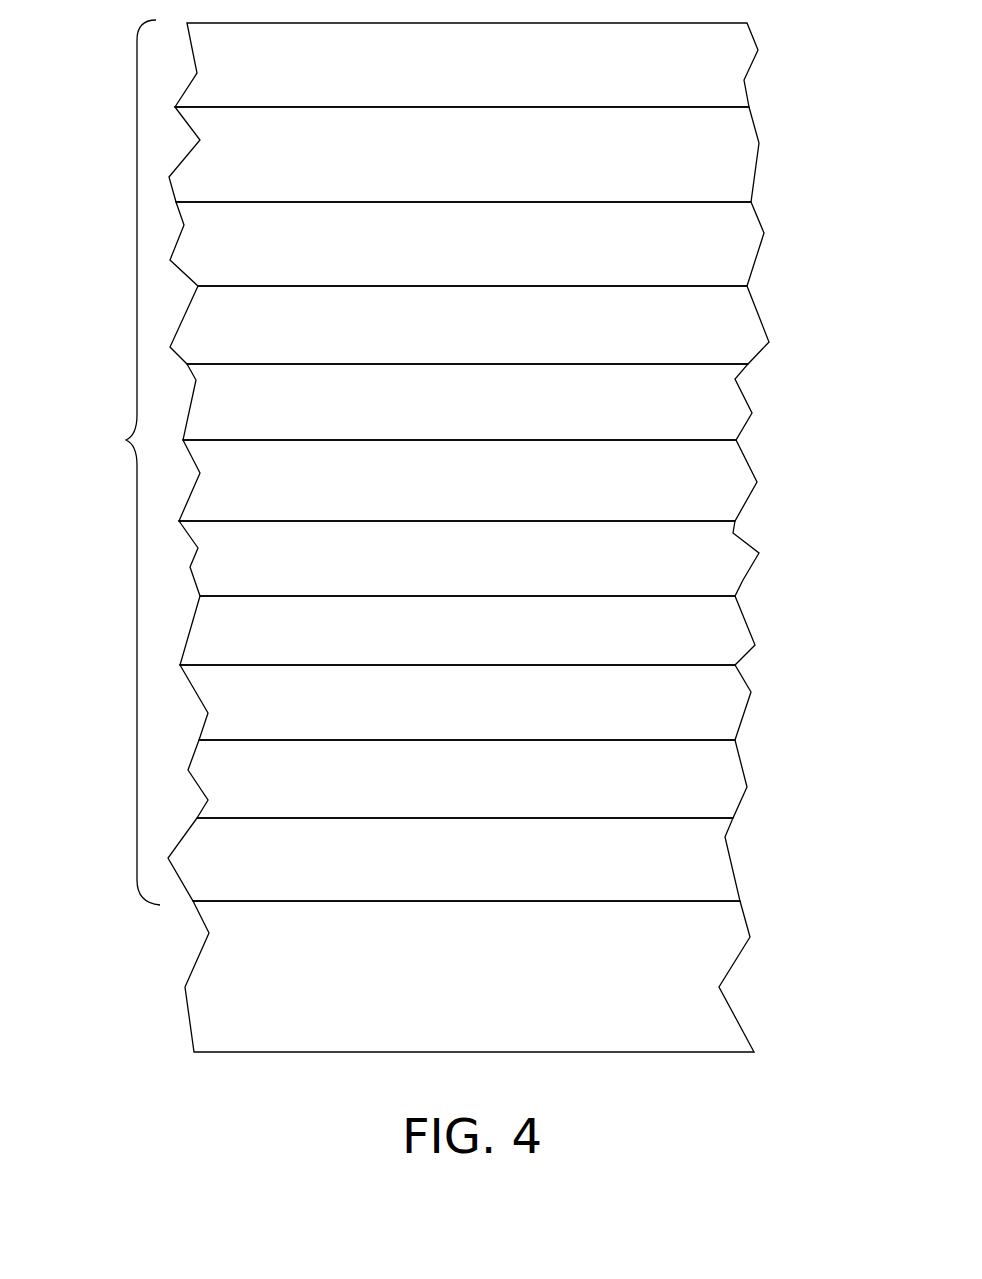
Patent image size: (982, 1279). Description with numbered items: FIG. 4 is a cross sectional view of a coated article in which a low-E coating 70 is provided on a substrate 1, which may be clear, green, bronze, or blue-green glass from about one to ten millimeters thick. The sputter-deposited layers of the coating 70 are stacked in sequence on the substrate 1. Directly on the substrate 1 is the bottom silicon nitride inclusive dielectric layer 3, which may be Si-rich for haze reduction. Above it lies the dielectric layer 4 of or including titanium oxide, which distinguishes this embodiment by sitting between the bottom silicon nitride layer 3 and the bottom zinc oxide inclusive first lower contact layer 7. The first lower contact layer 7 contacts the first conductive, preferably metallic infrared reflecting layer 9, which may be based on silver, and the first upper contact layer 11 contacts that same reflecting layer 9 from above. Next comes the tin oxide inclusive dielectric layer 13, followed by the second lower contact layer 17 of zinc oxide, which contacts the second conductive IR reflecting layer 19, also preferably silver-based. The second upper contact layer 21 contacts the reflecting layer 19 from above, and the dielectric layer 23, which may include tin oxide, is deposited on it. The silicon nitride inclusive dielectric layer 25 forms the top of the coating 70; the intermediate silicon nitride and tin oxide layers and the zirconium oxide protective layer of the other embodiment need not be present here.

The low-E coating 70 is at (122, 440).
The silicon nitride inclusive dielectric layer 25 is at (712, 60).
The dielectric layer 23 is at (713, 155).
The second upper contact layer 21 is at (727, 247).
The second IR reflecting layer 19 is at (728, 320).
The second lower contact layer 17 is at (713, 398).
The tin oxide inclusive dielectric layer 13 is at (720, 490).
The first upper contact layer 11 is at (723, 567).
The first IR reflecting layer 9 is at (726, 630).
The first lower contact layer 7 is at (716, 705).
The dielectric layer of titanium oxide 4 is at (710, 780).
The bottom silicon nitride inclusive dielectric layer 3 is at (707, 871).
The substrate 1 is at (700, 970).